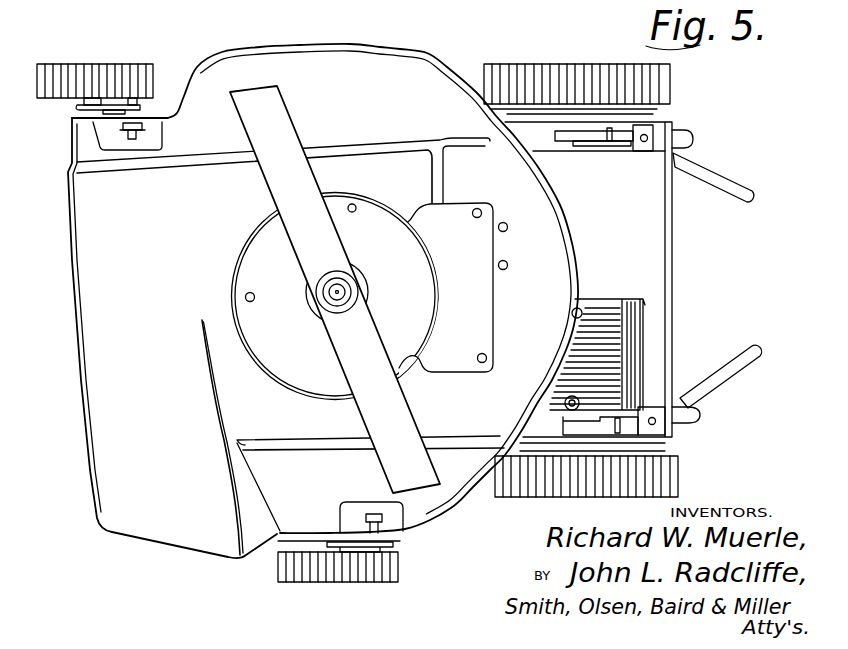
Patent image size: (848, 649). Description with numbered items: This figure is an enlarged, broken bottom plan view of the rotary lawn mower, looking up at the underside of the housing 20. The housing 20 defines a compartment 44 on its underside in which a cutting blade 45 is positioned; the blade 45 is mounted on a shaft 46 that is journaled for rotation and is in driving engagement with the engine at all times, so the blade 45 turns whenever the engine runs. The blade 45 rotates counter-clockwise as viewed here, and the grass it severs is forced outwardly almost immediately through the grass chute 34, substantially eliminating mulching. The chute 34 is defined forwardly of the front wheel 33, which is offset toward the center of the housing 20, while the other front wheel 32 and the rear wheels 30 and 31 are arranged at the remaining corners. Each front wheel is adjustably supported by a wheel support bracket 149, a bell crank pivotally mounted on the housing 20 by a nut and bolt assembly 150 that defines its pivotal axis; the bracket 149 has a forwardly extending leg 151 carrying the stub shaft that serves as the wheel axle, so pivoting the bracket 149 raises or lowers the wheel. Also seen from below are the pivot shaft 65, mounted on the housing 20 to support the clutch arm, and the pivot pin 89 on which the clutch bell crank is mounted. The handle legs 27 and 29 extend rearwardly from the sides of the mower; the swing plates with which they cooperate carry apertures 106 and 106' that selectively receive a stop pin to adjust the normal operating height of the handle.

The housing 20 is at (437, 37).
The handle leg 27 is at (742, 367).
The handle leg 29 is at (735, 190).
The rear wheel 30 is at (573, 66).
The rear wheel 31 is at (503, 496).
The front wheel 32 is at (57, 72).
The front wheel 33 is at (318, 574).
The grass chute 34 is at (200, 539).
The compartment 44 is at (200, 245).
The cutting blade 45 is at (280, 130).
The shaft 46 is at (338, 290).
The pivot shaft 65 is at (569, 313).
The pivot pin 89 is at (566, 399).
The apertures 106 is at (710, 434).
The apertures 106' is at (713, 125).
The wheel support bracket 149 is at (147, 107).
The nut and bolt assembly 150 is at (143, 137).
The forwardly extending leg 151 is at (77, 109).